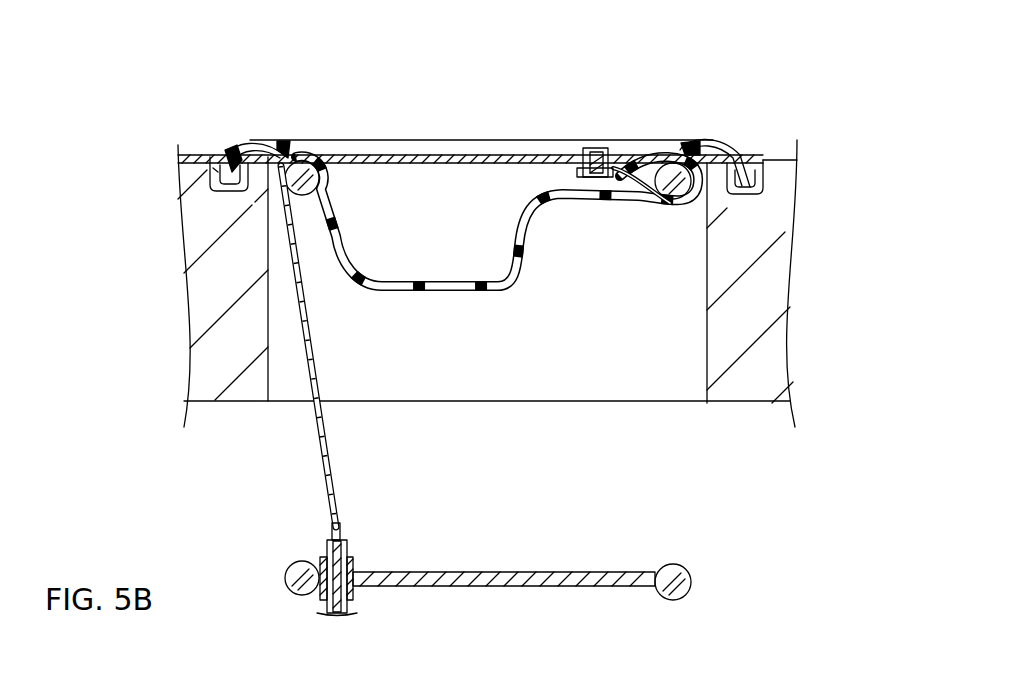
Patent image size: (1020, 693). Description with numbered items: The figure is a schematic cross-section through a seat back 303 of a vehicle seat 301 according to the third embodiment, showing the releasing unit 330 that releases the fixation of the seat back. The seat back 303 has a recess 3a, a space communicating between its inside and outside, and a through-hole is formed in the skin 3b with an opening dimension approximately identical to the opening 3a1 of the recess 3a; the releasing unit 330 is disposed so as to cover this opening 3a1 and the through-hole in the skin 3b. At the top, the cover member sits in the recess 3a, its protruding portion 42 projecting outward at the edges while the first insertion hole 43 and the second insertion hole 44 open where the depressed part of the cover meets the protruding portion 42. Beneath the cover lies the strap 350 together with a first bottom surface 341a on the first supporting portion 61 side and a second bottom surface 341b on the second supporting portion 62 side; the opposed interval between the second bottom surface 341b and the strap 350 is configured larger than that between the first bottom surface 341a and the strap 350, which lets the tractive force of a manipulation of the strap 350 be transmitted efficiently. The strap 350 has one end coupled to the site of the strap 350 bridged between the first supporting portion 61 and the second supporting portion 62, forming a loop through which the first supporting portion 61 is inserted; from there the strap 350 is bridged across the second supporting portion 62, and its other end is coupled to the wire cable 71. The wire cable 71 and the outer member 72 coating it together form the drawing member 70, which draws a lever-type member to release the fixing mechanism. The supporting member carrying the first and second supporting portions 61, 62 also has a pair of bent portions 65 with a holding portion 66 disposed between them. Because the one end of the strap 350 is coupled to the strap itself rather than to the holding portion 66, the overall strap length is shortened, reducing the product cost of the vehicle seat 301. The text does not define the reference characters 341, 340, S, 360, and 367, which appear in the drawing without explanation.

The vehicle seat 301 is at (170, 57).
The seat back 303 is at (777, 83).
The recess 3a is at (270, 370).
The opening 3a1 is at (236, 139).
The skin 3b is at (190, 138).
The protruding portion 42 is at (267, 138).
The second insertion hole 44 is at (303, 138).
The first insertion hole 43 is at (677, 143).
The strap 350 is at (368, 138).
The bellows 341 is at (497, 170).
The first bottom surface 341a is at (583, 150).
The second bottom surface 341b is at (458, 275).
The releasing unit 330 is at (753, 133).
The sealing mechanism 340 is at (577, 287).
The space S is at (432, 213).
The transmission mechanism 360 is at (508, 400).
The first supporting portion 61 is at (697, 183).
The second supporting portion 62 is at (287, 187).
The drawing member 70 is at (366, 389).
The wire cable 71 is at (337, 532).
The outer member 72 is at (337, 550).
The slider block 367 is at (348, 605).
The holding portion 66 is at (555, 581).
The bent portions 65 is at (290, 584).